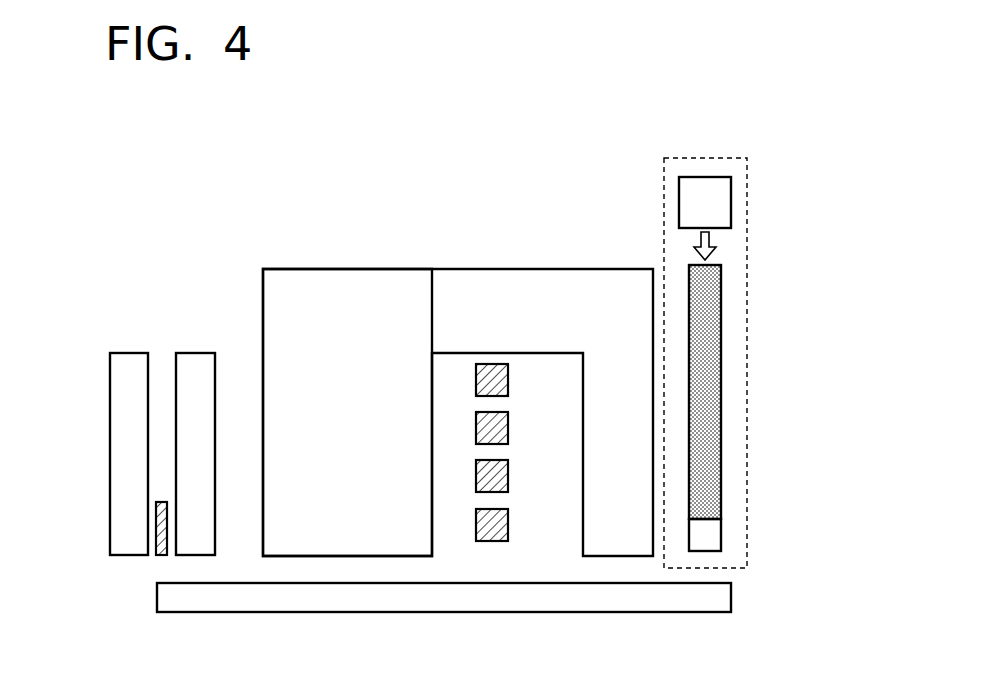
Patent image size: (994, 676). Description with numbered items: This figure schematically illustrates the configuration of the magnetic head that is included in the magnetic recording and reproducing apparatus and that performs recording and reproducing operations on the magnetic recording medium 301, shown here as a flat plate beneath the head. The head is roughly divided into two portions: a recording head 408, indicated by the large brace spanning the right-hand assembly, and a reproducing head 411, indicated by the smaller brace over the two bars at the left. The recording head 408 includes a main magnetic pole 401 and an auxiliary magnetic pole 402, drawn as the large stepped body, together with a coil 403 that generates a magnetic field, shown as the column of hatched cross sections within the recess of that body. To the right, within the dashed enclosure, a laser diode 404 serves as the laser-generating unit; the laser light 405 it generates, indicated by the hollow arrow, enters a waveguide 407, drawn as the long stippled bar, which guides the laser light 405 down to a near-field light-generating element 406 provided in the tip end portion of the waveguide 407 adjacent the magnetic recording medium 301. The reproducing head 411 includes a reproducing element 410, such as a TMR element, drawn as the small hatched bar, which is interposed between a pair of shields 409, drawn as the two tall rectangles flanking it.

The magnetic recording medium 301 is at (709, 598).
The main magnetic pole 401 is at (613, 493).
The auxiliary magnetic pole 402 is at (350, 478).
The coil 403 is at (495, 378).
The laser diode 404 is at (723, 203).
The laser light 405 is at (713, 246).
The near-field light-generating element 406 is at (709, 536).
The waveguide 407 is at (708, 303).
The recording head 408 is at (747, 142).
The shields 409 is at (131, 370).
The reproducing element 410 is at (158, 531).
The reproducing head 411 is at (225, 280).